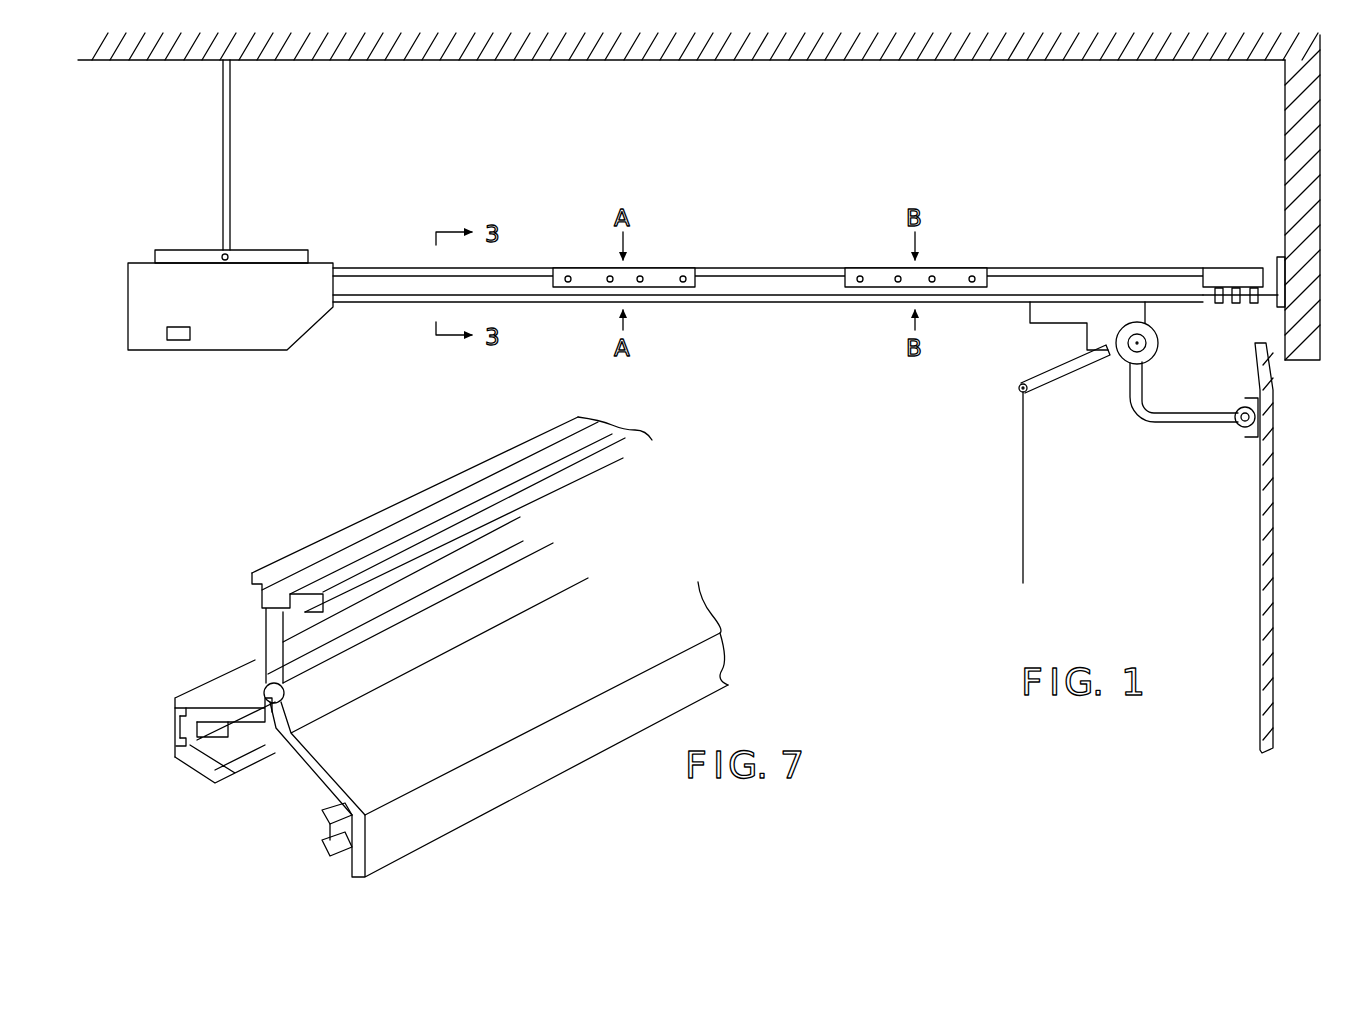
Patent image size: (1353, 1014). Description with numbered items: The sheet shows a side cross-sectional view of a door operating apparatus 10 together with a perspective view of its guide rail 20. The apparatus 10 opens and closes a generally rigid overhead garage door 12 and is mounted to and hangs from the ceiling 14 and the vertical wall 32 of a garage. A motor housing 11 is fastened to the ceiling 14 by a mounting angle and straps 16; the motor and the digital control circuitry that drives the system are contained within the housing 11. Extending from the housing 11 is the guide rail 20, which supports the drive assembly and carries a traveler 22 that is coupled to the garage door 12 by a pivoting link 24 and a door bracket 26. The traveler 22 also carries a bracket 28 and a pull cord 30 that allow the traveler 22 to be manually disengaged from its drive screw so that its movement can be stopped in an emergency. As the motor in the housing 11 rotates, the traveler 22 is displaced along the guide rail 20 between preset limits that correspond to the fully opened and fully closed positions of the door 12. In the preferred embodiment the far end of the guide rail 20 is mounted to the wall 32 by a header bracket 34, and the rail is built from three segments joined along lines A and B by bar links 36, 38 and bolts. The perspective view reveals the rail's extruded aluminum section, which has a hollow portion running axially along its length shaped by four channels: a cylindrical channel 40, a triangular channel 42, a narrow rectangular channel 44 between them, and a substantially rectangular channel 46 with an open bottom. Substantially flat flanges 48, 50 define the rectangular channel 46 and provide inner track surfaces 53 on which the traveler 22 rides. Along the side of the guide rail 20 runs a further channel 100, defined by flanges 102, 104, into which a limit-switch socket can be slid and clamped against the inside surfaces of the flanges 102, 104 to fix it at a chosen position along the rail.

In FIG. 1, the apparatus 10 is at (666, 204).
In FIG. 1, the motor housing 11 is at (240, 343).
In FIG. 1, the overhead garage door 12 is at (1275, 490).
In FIG. 1, the ceiling 14 is at (597, 63).
In FIG. 1, the mounting angle and straps 16 is at (232, 166).
In FIG. 1, the guide rail 20 is at (350, 268).
In FIG. 7, the guide rail 20 is at (490, 647).
In FIG. 1, the traveler 22 is at (1038, 325).
In FIG. 1, the pivoting link 24 is at (1184, 423).
In FIG. 1, the door bracket 26 is at (1246, 405).
In FIG. 1, the bracket 28 is at (1075, 366).
In FIG. 1, the pull cord 30 is at (1025, 516).
In FIG. 1, the vertical wall 32 is at (1283, 162).
In FIG. 1, the header bracket 34 is at (1276, 276).
In FIG. 1, the bar link 36 is at (665, 279).
In FIG. 1, the bar link 38 is at (955, 279).
In FIG. 7, the cylindrical channel 40 is at (268, 690).
In FIG. 7, the triangular channel 42 is at (233, 720).
In FIG. 7, the narrow rectangular channel 44 is at (292, 702).
In FIG. 7, the rectangular channel 46 is at (170, 775).
In FIG. 7, the flat flange 48 is at (332, 855).
In FIG. 7, the flat flange 50 is at (348, 822).
In FIG. 7, the inner track surfaces 53 is at (330, 831).
In FIG. 7, the channel 100 is at (180, 734).
In FIG. 7, the flange 102 is at (180, 716).
In FIG. 7, the flange 104 is at (180, 749).